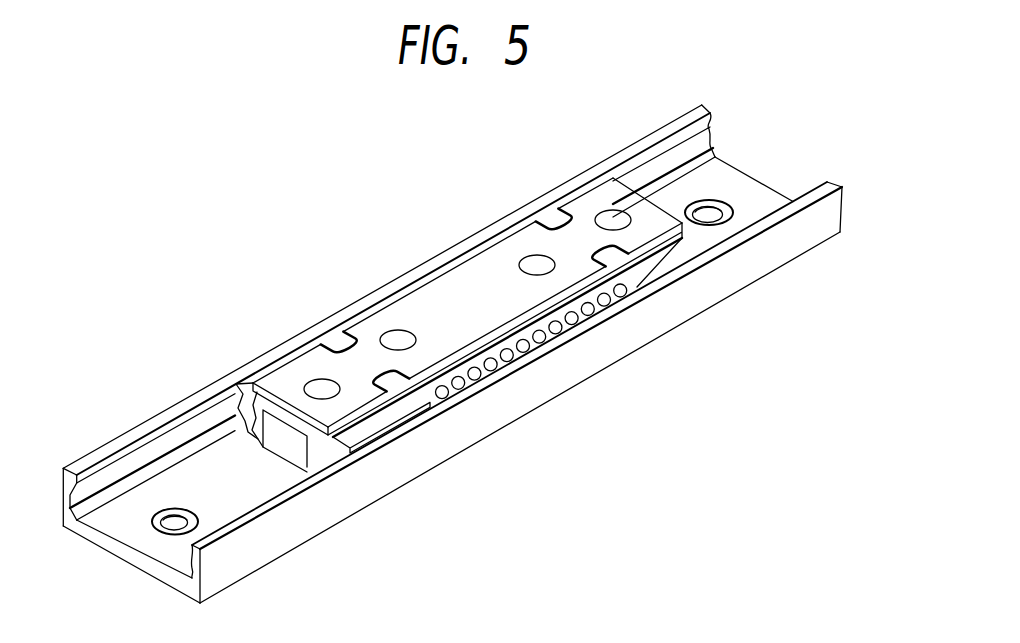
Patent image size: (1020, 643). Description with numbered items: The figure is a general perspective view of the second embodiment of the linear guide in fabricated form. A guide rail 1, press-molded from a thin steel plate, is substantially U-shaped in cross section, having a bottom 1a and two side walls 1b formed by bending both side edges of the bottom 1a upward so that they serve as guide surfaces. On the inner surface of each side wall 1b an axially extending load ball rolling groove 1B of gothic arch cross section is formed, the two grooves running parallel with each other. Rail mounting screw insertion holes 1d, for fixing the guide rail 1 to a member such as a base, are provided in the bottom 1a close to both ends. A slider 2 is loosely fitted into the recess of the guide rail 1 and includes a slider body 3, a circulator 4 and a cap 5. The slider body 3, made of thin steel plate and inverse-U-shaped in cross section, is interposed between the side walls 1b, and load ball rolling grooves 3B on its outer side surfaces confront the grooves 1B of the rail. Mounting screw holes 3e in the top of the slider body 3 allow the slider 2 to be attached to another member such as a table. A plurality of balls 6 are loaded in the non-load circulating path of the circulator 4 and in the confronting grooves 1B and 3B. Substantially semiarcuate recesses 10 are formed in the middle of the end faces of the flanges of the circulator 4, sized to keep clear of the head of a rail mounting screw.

The guide rail 1 is at (473, 348).
The bottom 1a is at (752, 195).
The side wall 1b is at (658, 131).
The load ball rolling groove 1B is at (108, 483).
The rail mounting screw insertion hole 1d is at (716, 222).
The slider 2 is at (475, 365).
The slider body 3 is at (495, 300).
The mounting screw hole 3e is at (523, 268).
The load ball rolling groove 3B is at (620, 318).
The circulator 4 is at (255, 418).
The cap 5 is at (378, 425).
The balls 6 is at (577, 323).
The recess 10 is at (298, 442).